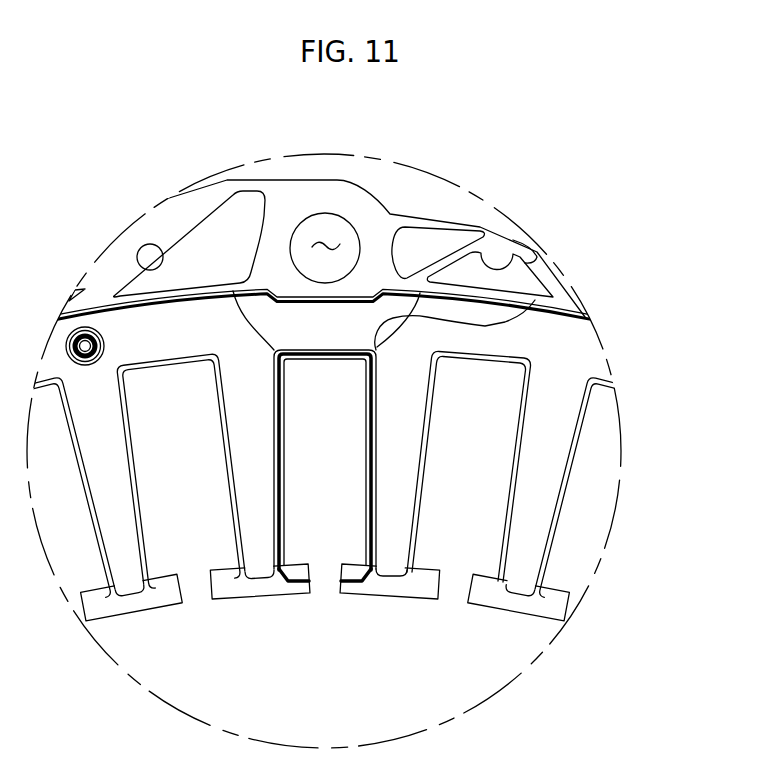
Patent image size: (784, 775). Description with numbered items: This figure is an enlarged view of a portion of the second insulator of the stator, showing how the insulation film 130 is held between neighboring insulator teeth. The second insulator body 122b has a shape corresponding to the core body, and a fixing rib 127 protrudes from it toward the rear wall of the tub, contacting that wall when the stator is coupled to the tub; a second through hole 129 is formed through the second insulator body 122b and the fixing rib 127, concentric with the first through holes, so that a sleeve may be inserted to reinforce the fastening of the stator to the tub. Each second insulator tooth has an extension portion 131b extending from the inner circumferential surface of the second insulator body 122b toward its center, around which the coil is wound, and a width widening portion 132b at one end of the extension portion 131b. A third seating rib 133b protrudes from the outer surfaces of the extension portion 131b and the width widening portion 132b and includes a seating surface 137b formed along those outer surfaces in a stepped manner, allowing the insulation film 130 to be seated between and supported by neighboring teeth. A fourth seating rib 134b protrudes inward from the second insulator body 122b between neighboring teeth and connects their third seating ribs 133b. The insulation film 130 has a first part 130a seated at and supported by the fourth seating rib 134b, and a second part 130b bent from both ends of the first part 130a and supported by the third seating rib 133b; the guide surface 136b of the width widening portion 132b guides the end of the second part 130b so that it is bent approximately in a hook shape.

The second insulator body 122b is at (220, 237).
The fixing rib 127 is at (292, 197).
The second through hole 129 is at (333, 245).
The insulation film 130 is at (617, 243).
The first part 130a is at (545, 293).
The second part 130b is at (377, 436).
The extension portion 131b is at (250, 437).
The width widening portion 132b is at (262, 594).
The third seating rib 133b is at (220, 452).
The fourth seating rib 134b is at (157, 361).
The guide surface 136b is at (218, 603).
The seating surface 137b is at (231, 522).